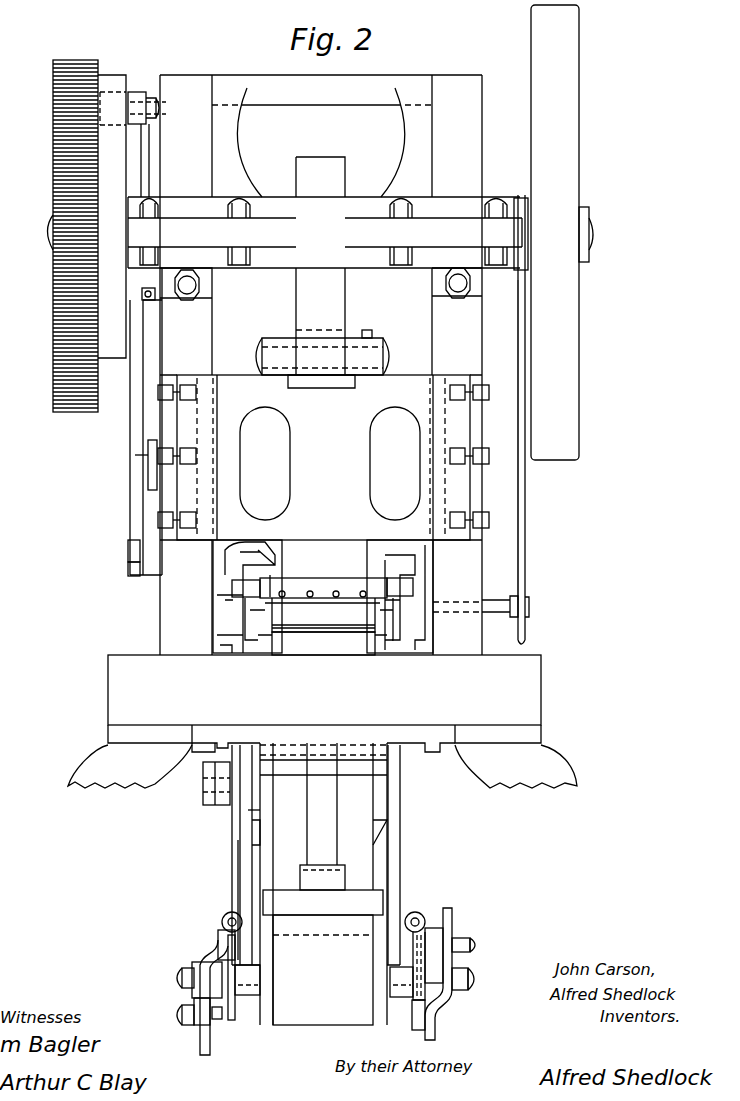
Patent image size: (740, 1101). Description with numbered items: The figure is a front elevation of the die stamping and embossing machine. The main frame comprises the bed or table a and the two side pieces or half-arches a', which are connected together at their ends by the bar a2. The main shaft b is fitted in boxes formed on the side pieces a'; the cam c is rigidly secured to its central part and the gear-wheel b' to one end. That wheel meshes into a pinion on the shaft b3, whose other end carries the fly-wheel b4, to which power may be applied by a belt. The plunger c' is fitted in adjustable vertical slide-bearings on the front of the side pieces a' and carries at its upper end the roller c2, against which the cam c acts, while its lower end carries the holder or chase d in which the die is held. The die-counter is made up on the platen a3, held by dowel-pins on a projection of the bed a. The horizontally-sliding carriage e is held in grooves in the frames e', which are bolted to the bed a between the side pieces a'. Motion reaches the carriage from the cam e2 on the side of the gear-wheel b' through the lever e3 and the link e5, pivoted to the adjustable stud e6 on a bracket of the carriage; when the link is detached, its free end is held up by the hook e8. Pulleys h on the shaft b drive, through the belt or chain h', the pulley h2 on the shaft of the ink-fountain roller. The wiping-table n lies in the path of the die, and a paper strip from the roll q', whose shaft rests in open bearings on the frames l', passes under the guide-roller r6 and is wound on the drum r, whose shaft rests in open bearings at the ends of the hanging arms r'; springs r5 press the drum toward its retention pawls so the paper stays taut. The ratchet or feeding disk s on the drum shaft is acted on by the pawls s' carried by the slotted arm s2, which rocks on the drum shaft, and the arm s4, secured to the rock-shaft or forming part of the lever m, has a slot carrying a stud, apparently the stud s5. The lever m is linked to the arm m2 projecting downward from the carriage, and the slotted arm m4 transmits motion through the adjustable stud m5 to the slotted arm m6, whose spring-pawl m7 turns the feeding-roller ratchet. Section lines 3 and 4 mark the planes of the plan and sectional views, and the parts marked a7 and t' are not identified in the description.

The bed or table a is at (322, 721).
The side pieces or half-arches a' is at (321, 365).
The bar a2 is at (321, 136).
The platen a3 is at (322, 644).
The frame side portion a7 is at (448, 597).
The main shaft b is at (275, 232).
The gear-wheel b' is at (75, 248).
The shaft b3 is at (598, 234).
The fly-wheel b4 is at (569, 232).
The cam c is at (321, 263).
The plunger c' is at (323, 457).
The roller c2 is at (352, 344).
The holder or chase d is at (322, 598).
The wiping-table n is at (323, 618).
The carriage e is at (260, 421).
The frames e' is at (323, 596).
The cam e2 is at (112, 205).
The lever e3 is at (134, 284).
The link or rod e5 is at (136, 575).
The adjustable stud e6 is at (120, 551).
The hook e8 is at (148, 462).
The pulleys h is at (514, 404).
The belt or chain h' is at (531, 440).
The pulley h2 is at (494, 610).
The frames l' is at (323, 855).
The lever m is at (240, 830).
The arm m2 is at (225, 752).
The slotted arm m4 is at (432, 920).
The stud m5 is at (350, 876).
The slotted arm m6 is at (455, 970).
The spring-pawl m7 is at (410, 1025).
The roll q' is at (323, 884).
The drum r is at (324, 990).
The hanging arms r' is at (321, 911).
The springs r5 is at (432, 905).
The guide-roller r6 is at (323, 902).
The ratchet or feeding disk s is at (224, 992).
The pawls s' is at (203, 969).
The slotted arm s2 is at (194, 1028).
The arm s4 is at (220, 1025).
The stop nuts s5 is at (177, 996).
The lower plunger t' is at (322, 816).
The section line 3 3 is at (585, 567).
The section line 4 4 is at (540, 918).